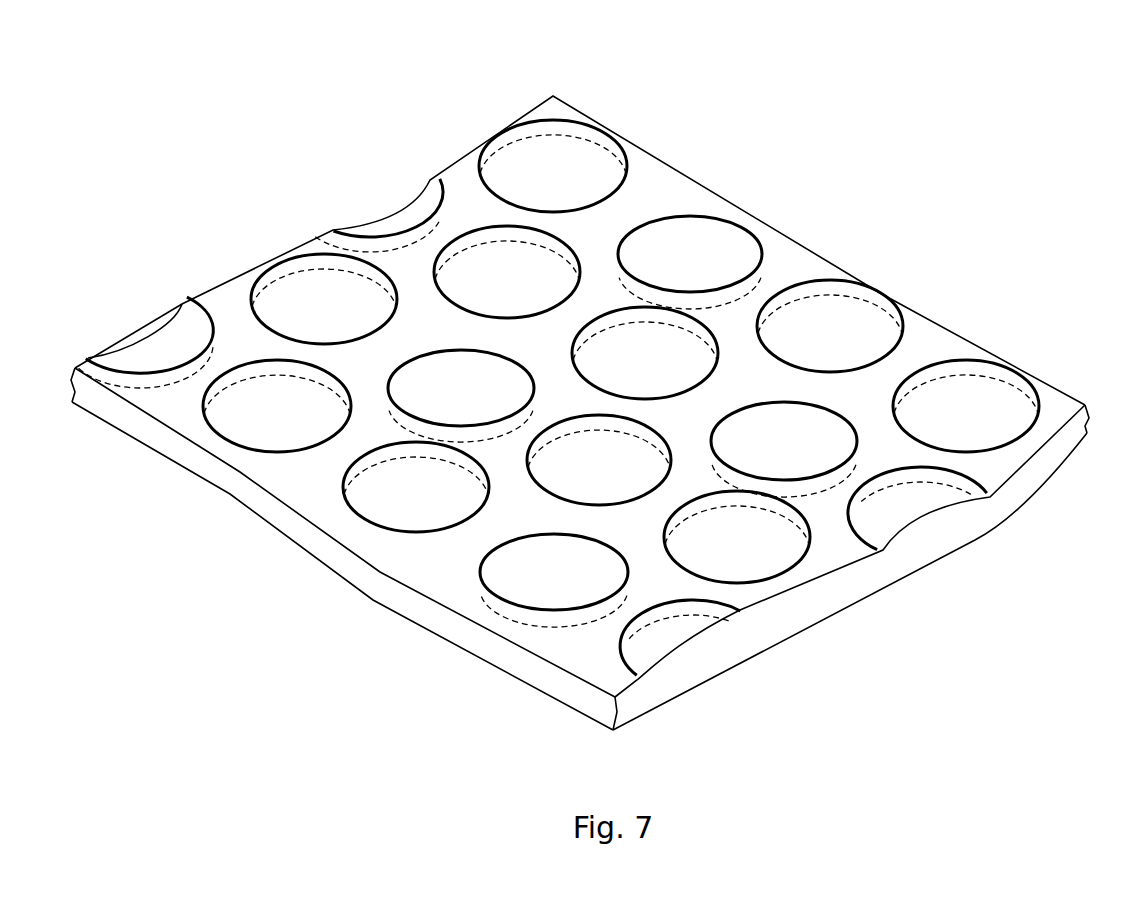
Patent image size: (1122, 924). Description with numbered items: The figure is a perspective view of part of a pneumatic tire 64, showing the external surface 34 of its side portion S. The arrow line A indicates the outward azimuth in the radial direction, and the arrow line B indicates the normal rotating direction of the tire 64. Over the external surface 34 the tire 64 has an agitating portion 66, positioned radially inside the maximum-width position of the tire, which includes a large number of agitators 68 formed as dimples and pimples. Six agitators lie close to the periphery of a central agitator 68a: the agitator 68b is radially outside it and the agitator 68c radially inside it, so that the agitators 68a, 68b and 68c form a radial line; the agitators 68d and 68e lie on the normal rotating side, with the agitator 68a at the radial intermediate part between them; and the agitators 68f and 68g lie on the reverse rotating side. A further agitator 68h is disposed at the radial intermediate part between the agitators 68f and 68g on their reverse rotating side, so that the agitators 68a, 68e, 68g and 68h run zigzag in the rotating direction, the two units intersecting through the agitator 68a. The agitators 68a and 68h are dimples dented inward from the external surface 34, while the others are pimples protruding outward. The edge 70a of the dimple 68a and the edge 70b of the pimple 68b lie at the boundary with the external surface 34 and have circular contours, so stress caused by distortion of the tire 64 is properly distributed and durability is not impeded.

The external surface 34 is at (587, 667).
The agitators 68 is at (558, 376).
The agitator (dimple) 68a is at (428, 352).
The agitator (pimple) 68b is at (290, 262).
The agitator (pimple) 68c is at (547, 497).
The agitator (pimple) 68d is at (247, 450).
The agitator (pimple) 68e is at (363, 510).
The agitator (pimple) 68f is at (477, 232).
The agitator (pimple) 68g is at (609, 313).
The agitator (dimple) 68h is at (712, 218).
The edge of the dimple 70a is at (388, 388).
The edge of the pimple 70b is at (248, 450).
The pneumatic tire 64 is at (777, 107).
The agitating portion 66 is at (963, 333).
The side portion S is at (578, 96).
The arrow line A is at (780, 118).
The arrow line B is at (367, 93).